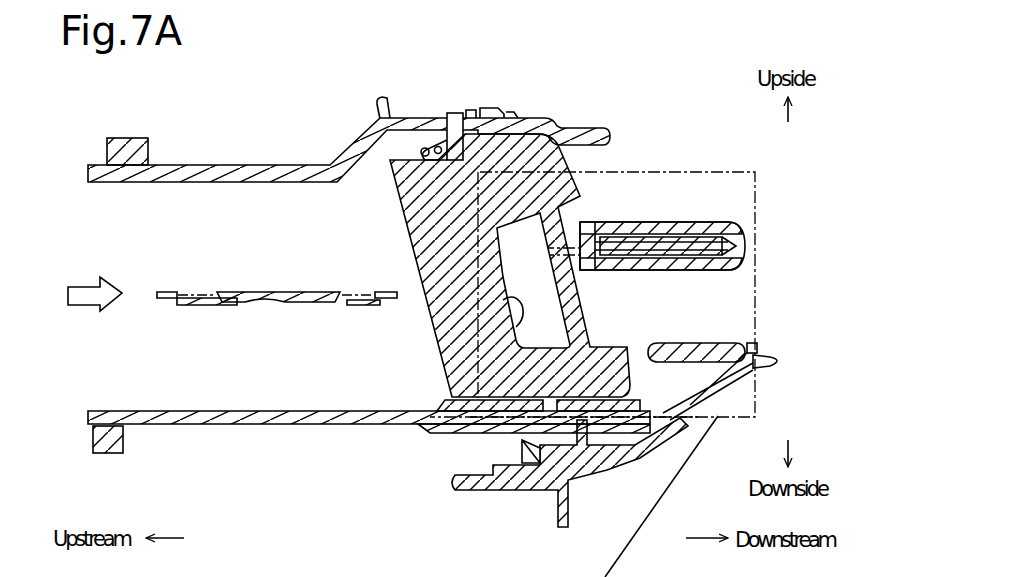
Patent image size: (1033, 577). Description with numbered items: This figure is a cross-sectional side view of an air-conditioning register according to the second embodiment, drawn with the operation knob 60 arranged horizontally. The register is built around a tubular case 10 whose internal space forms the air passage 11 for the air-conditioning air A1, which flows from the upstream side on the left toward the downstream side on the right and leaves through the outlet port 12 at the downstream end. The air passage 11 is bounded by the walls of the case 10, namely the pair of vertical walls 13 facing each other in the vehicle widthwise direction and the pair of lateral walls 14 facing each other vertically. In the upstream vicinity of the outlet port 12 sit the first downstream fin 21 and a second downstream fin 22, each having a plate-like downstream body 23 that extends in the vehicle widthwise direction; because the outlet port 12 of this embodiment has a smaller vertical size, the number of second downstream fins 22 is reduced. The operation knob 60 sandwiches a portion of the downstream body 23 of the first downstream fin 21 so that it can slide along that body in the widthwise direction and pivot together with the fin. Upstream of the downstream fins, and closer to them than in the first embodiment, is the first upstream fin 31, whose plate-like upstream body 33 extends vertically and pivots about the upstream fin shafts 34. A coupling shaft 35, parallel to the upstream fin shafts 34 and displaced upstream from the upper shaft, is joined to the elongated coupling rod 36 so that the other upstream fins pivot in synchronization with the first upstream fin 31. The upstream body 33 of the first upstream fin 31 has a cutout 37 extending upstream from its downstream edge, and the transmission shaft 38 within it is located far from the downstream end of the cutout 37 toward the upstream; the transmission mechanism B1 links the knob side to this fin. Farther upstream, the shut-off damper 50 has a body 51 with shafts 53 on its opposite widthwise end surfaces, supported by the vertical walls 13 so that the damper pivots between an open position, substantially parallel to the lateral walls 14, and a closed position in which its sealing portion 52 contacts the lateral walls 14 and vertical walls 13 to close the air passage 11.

The case 10 is at (349, 133).
The air passage 11 is at (199, 245).
The outlet port 12 is at (612, 142).
The vertical walls 13 is at (190, 190).
The lateral walls 14 is at (232, 172).
The first downstream fin 21 is at (652, 232).
The second downstream fin 22 is at (682, 342).
The downstream body 23 is at (688, 271).
The first upstream fin 31 is at (489, 272).
The upstream body 33 is at (404, 222).
The upstream fin shafts 34 is at (472, 118).
The coupling shaft 35 is at (424, 138).
The coupling rod 36 is at (384, 112).
The cutout 37 is at (508, 330).
The transmission shaft 38 is at (593, 308).
The shut-off damper 50 is at (277, 318).
The body 51 is at (253, 307).
The sealing portion 52 is at (167, 307).
The shafts 53 is at (272, 292).
The operation knob 60 is at (724, 227).
The air-conditioning air A1 is at (84, 309).
The transmission mechanism B1 is at (572, 218).